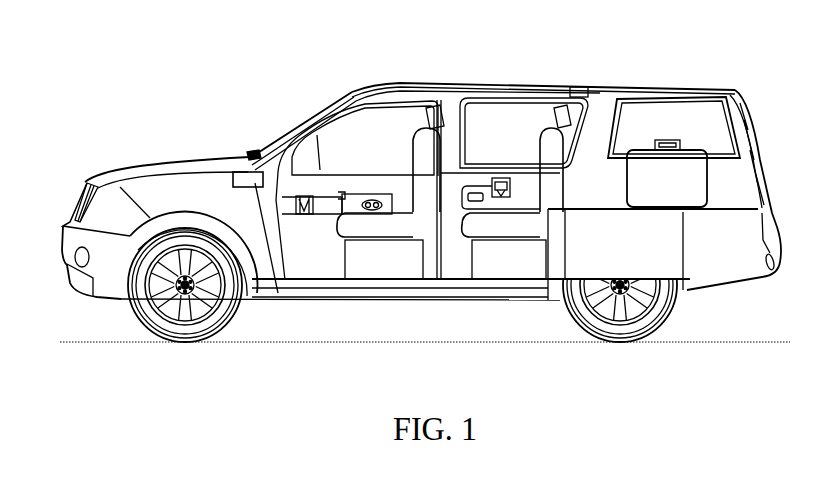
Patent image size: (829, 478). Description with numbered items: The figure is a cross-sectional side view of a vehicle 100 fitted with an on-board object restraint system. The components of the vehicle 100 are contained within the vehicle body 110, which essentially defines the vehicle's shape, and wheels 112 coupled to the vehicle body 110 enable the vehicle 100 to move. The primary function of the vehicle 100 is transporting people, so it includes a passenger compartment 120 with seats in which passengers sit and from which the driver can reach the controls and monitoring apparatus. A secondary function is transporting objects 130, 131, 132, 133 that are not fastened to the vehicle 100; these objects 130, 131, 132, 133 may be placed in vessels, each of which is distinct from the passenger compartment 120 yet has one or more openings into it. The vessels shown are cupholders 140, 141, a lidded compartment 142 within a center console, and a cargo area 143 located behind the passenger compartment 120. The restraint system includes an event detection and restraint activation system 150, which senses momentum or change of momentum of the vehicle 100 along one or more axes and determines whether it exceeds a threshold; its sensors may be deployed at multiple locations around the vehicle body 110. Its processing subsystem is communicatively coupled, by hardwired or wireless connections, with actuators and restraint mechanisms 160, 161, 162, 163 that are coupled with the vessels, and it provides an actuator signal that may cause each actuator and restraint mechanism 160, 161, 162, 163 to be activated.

The vehicle 100 is at (156, 64).
The vehicle body 110 is at (700, 88).
The wheels 112 is at (142, 313).
The passenger compartment 120 is at (372, 127).
The object 130 is at (303, 214).
The object 131 is at (497, 200).
The object 132 is at (376, 210).
The object 133 is at (668, 177).
The cupholder 140 is at (298, 198).
The cupholder 141 is at (490, 238).
The lidded compartment 142 is at (360, 197).
The cargo area 143 is at (636, 123).
The event detection and restraint activation system 150 is at (246, 178).
The actuator and restraint mechanism 160 is at (312, 199).
The actuator and restraint mechanism 161 is at (505, 193).
The actuator and restraint mechanism 162 is at (342, 196).
The actuator and restraint mechanism 163 is at (580, 88).